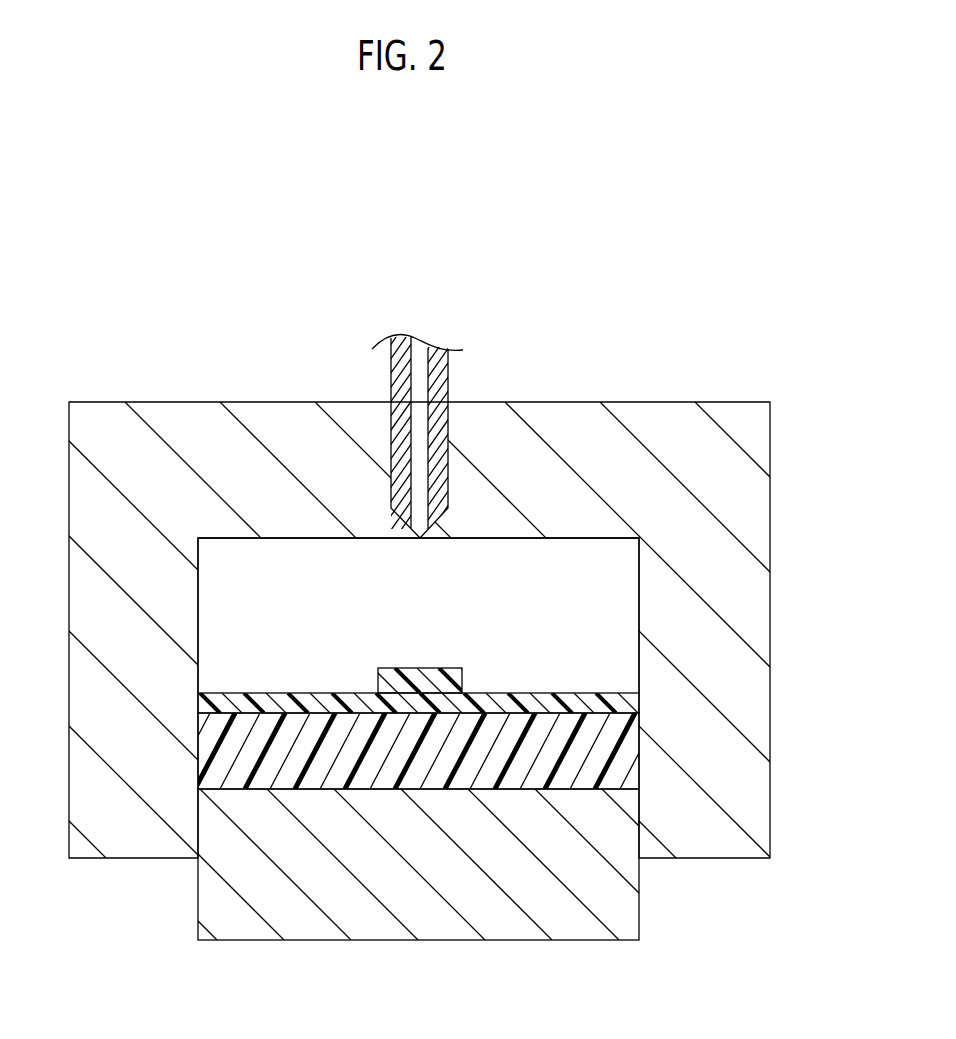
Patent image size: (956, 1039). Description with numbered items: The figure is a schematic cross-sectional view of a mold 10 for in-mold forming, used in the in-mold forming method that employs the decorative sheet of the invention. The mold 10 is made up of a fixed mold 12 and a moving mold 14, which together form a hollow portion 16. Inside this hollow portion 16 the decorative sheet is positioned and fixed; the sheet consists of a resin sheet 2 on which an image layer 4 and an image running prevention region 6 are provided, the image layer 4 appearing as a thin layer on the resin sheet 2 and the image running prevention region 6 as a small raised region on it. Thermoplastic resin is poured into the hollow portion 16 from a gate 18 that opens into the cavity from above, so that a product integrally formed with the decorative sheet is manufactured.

The mold 10 is at (627, 383).
The fixed mold 12 is at (273, 902).
The resin sheet 2 is at (553, 760).
The image layer 4 is at (470, 703).
The image running prevention region 6 is at (415, 675).
The moving mold 14 is at (147, 800).
The hollow portion 16 is at (593, 593).
The gate 18 is at (418, 557).